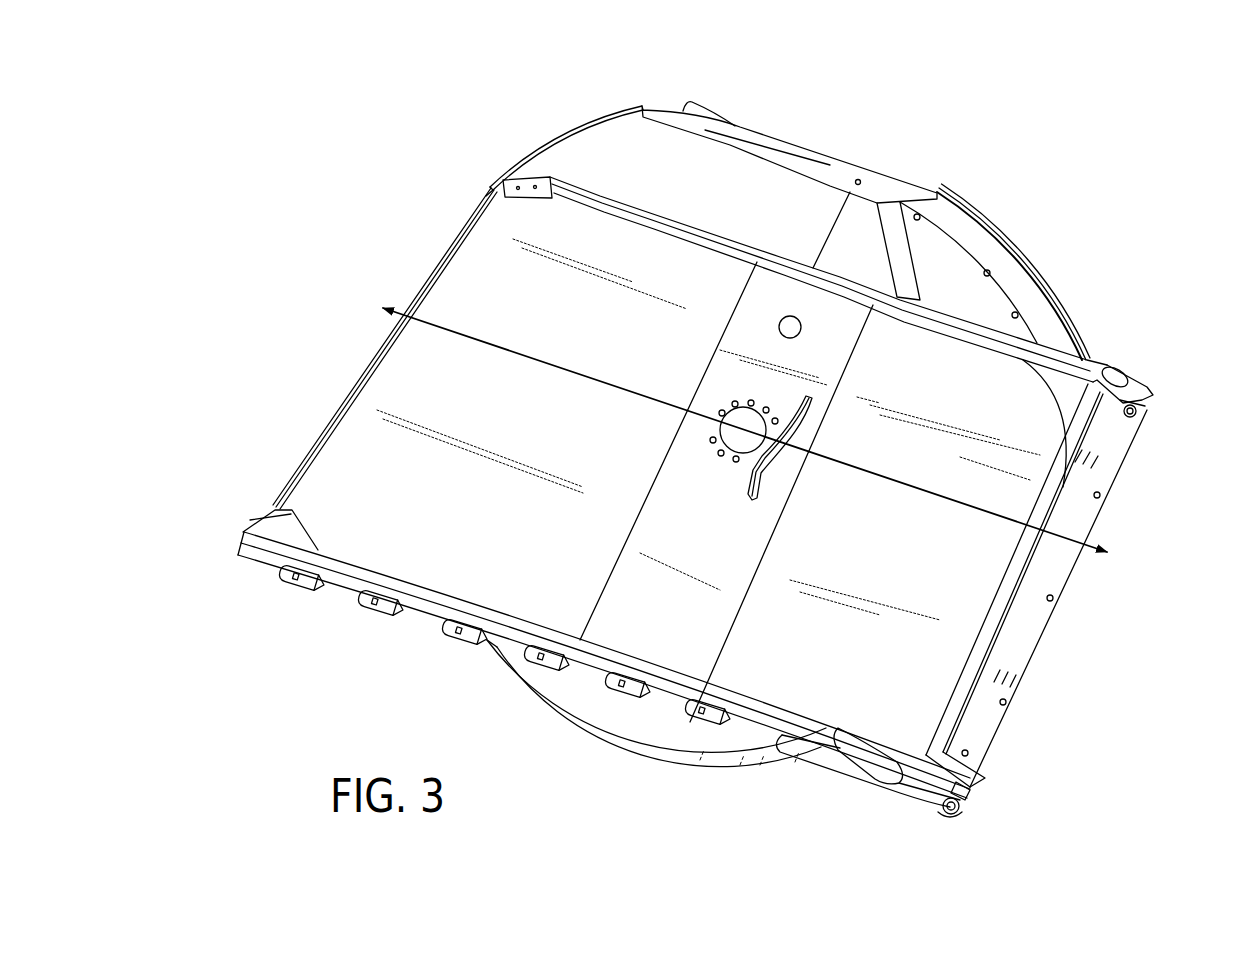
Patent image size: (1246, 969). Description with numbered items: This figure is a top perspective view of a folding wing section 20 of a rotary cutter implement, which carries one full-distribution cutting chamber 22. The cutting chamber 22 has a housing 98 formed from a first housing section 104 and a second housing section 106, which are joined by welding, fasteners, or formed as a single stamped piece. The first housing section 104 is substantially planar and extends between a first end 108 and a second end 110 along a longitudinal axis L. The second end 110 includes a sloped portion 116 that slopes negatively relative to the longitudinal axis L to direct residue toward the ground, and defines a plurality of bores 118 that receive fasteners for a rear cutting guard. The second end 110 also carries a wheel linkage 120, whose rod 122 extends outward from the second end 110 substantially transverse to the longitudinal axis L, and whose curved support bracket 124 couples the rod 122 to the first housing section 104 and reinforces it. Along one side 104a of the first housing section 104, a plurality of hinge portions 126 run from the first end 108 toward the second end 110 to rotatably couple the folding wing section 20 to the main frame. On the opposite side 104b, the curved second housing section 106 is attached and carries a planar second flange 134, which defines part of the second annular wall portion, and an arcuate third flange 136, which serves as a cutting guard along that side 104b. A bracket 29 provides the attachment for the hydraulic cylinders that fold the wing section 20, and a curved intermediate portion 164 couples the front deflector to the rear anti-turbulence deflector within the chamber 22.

The folding wing section 20 is at (1115, 92).
The full-distribution cutting chamber 22 is at (1095, 178).
The bracket 29 is at (770, 478).
The housing 98 is at (445, 209).
The first housing section 104 is at (360, 360).
The side of the first housing section 104a is at (760, 723).
The side of the first housing section 104b is at (1092, 353).
The second housing section 106 is at (548, 135).
The first end 108 is at (318, 423).
The second end 110 is at (1080, 640).
The sloped portion 116 is at (992, 777).
The bores 118 is at (1003, 702).
The wheel linkage 120 is at (947, 825).
The rod 122 is at (963, 792).
The support bracket 124 is at (870, 784).
The hinge portions 126 is at (297, 587).
The second flange 134 is at (858, 146).
The third flange 136 is at (1065, 282).
The intermediate portion 164 is at (580, 732).
The longitudinal axis L is at (643, 397).